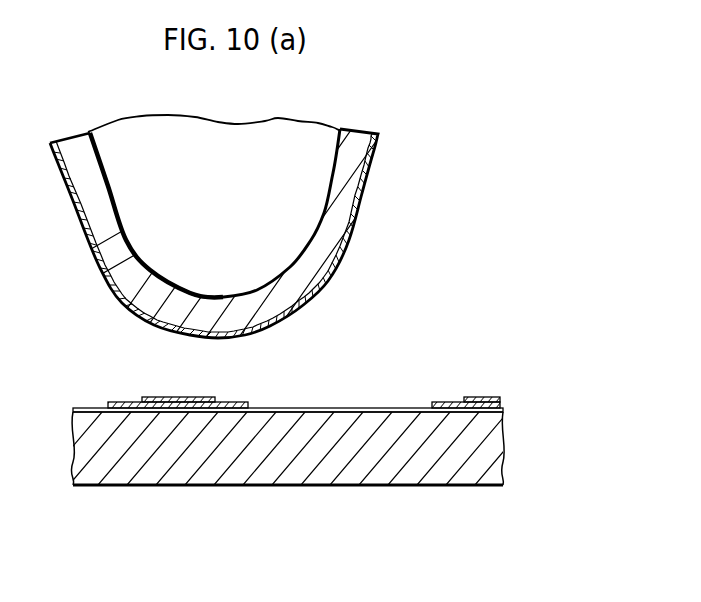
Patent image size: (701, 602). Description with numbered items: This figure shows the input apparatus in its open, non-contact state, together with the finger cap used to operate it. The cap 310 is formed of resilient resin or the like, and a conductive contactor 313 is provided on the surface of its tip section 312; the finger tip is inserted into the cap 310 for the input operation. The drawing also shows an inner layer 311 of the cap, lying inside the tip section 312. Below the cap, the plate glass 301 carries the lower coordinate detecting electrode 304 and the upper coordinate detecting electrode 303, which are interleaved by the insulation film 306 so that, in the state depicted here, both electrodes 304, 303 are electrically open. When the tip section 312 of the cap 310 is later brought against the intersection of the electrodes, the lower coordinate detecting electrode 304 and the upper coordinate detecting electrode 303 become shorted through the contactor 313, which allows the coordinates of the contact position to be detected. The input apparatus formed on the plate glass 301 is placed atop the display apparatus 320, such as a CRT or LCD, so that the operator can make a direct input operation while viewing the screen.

The plate glass 301 is at (295, 487).
The upper coordinate detecting electrode 303 is at (478, 397).
The lower coordinate detecting electrode 304 is at (340, 408).
The insulation film 306 is at (432, 402).
The cap 310 is at (376, 133).
The inner coating layer 311 is at (112, 180).
The tip section 312 is at (143, 313).
The conductive contactor 313 is at (363, 197).
The display apparatus 320 is at (320, 442).